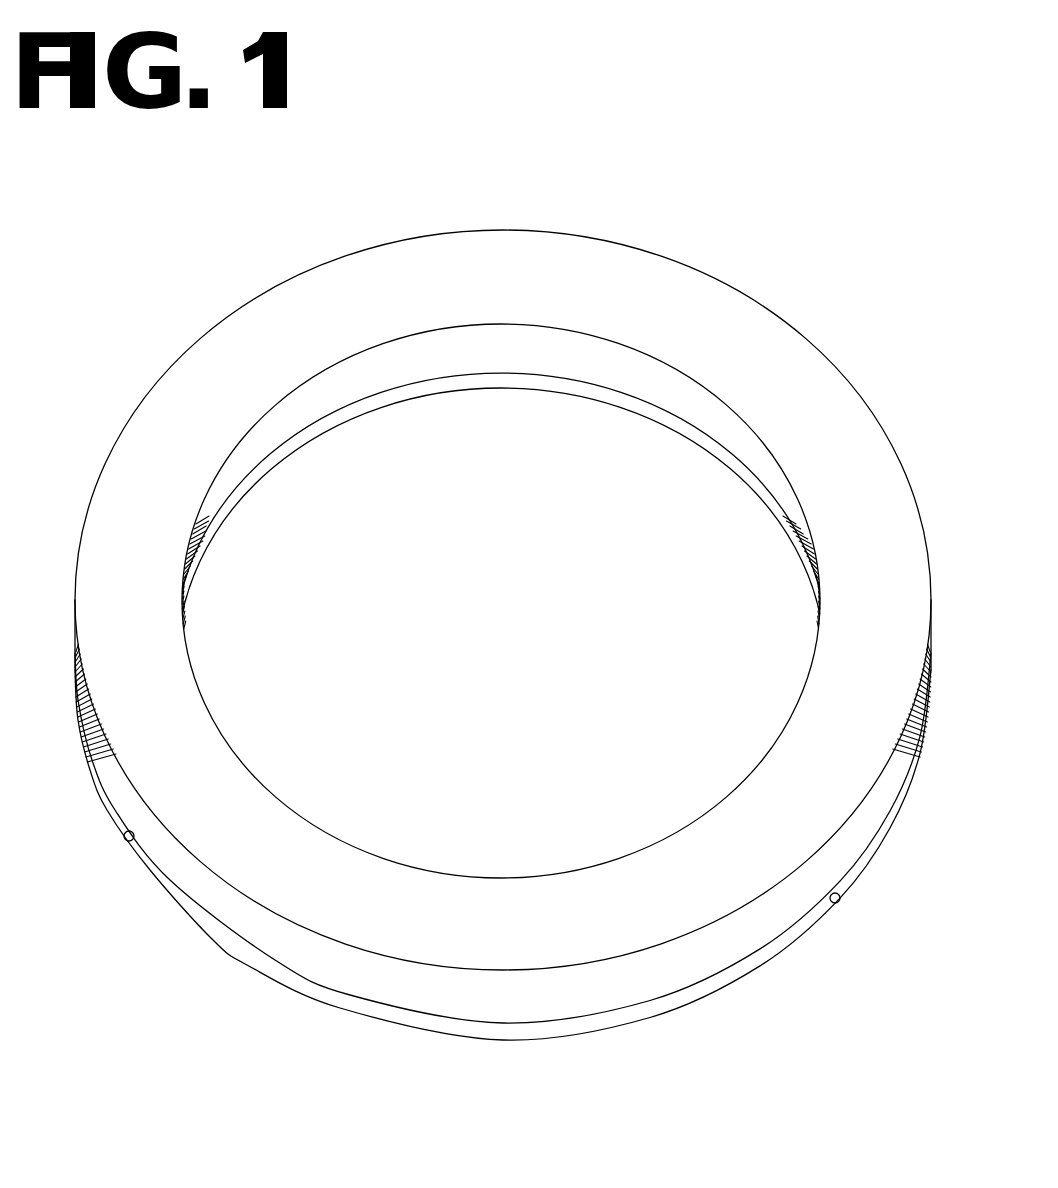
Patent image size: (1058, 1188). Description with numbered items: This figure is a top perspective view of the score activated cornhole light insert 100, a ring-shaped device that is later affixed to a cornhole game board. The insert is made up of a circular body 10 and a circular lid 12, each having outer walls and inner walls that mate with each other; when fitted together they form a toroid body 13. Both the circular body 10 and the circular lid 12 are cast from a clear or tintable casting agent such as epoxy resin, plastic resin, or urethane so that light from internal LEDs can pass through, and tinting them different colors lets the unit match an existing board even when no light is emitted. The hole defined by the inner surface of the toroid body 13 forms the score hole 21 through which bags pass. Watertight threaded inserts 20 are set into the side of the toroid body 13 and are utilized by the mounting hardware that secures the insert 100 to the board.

The score activated cornhole light insert 100 is at (311, 1039).
The circular body 10 is at (238, 360).
The circular lid 12 is at (788, 510).
The toroid body 13 is at (413, 990).
The watertight threaded inserts 20 is at (125, 842).
The score hole 21 is at (532, 723).